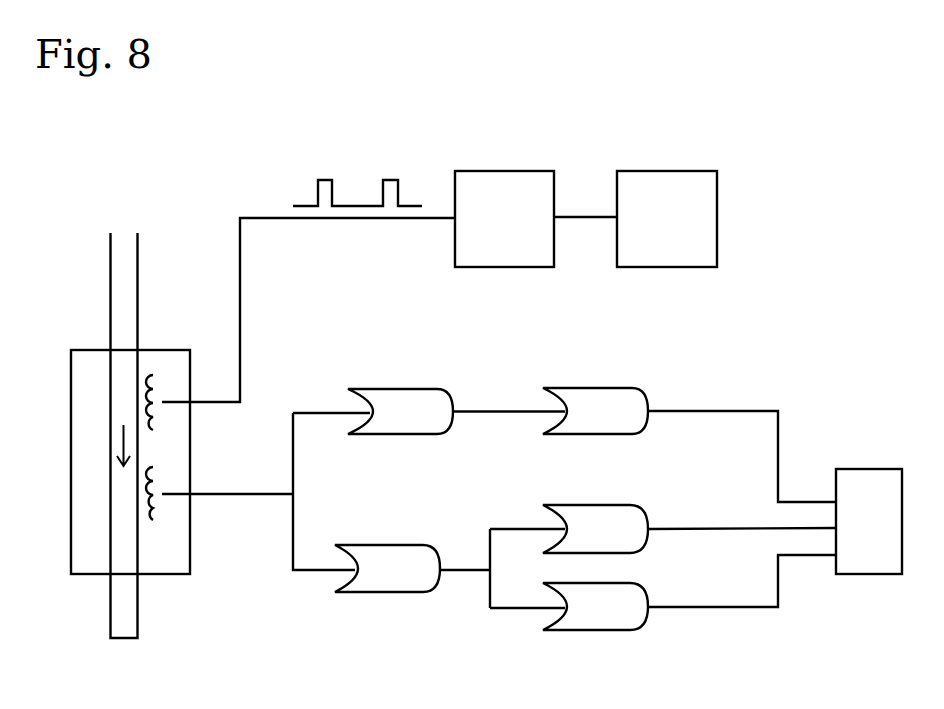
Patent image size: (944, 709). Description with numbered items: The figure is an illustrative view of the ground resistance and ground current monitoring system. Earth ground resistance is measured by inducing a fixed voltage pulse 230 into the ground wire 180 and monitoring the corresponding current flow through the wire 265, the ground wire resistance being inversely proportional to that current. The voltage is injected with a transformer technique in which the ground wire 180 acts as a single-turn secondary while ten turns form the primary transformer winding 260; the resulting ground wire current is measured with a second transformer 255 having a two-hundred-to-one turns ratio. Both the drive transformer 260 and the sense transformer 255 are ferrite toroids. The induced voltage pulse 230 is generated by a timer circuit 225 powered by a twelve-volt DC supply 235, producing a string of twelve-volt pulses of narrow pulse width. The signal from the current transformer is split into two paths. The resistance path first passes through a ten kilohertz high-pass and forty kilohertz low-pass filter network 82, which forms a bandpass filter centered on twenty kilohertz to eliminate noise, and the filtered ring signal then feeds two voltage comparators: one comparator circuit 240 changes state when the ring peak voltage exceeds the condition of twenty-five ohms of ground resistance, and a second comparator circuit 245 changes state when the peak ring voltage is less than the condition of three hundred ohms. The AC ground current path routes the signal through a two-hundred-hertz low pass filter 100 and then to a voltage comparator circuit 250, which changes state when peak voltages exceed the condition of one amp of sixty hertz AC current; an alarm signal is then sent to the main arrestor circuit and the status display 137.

The ground wire 180 is at (108, 310).
The wire 265 is at (111, 468).
The primary transformer winding 260 is at (165, 389).
The second transformer 255 is at (162, 512).
The fixed voltage pulse 230 is at (307, 178).
The 555 timer circuit 225 is at (555, 175).
The 12V DC supply 235 is at (717, 175).
The 200 Hz low pass filter 100 is at (423, 389).
The voltage comparator circuit 250 is at (589, 388).
The high-pass and low-pass filter network 82 is at (388, 592).
The second comparator circuit 245 is at (652, 511).
The comparator circuit 240 is at (588, 630).
The status display 137 is at (868, 469).